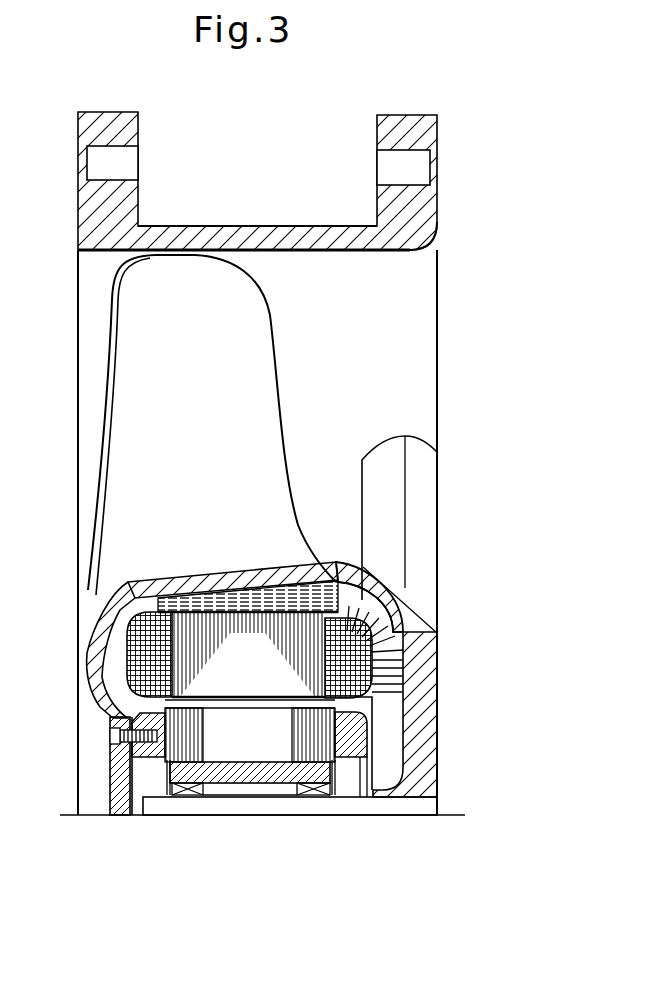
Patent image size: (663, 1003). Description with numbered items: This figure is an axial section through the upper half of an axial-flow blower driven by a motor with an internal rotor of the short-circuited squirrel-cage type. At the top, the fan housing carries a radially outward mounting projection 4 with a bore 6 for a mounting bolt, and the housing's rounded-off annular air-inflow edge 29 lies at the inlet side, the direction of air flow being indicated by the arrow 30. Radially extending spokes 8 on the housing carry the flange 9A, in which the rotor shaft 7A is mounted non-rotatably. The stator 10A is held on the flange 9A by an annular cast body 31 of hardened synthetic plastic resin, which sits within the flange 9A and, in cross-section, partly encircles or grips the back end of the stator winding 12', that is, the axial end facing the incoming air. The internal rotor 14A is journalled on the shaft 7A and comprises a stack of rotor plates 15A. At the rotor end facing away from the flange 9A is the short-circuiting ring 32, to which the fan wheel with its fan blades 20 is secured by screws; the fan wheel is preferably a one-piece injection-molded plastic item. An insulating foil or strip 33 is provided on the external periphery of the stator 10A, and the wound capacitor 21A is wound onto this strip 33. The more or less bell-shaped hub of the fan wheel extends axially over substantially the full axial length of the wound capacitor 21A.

The projection 4 is at (410, 209).
The bore 6 is at (414, 162).
The rounded-off annular air-inflow edge 29 is at (432, 246).
The arrow 30 is at (457, 300).
The fan blades 20 is at (196, 363).
The spokes 8 is at (418, 475).
The wound capacitor 21A is at (330, 583).
The insulating foil or strip 33 is at (370, 607).
The stator winding 12' is at (415, 609).
The cast body 31 is at (393, 651).
The stator 10A is at (287, 687).
The flange 9A is at (423, 718).
The short-circuiting ring 32 is at (150, 752).
The rotor plates 15A is at (282, 745).
The internal rotor 14A is at (352, 735).
The rotor shaft 7A is at (416, 808).